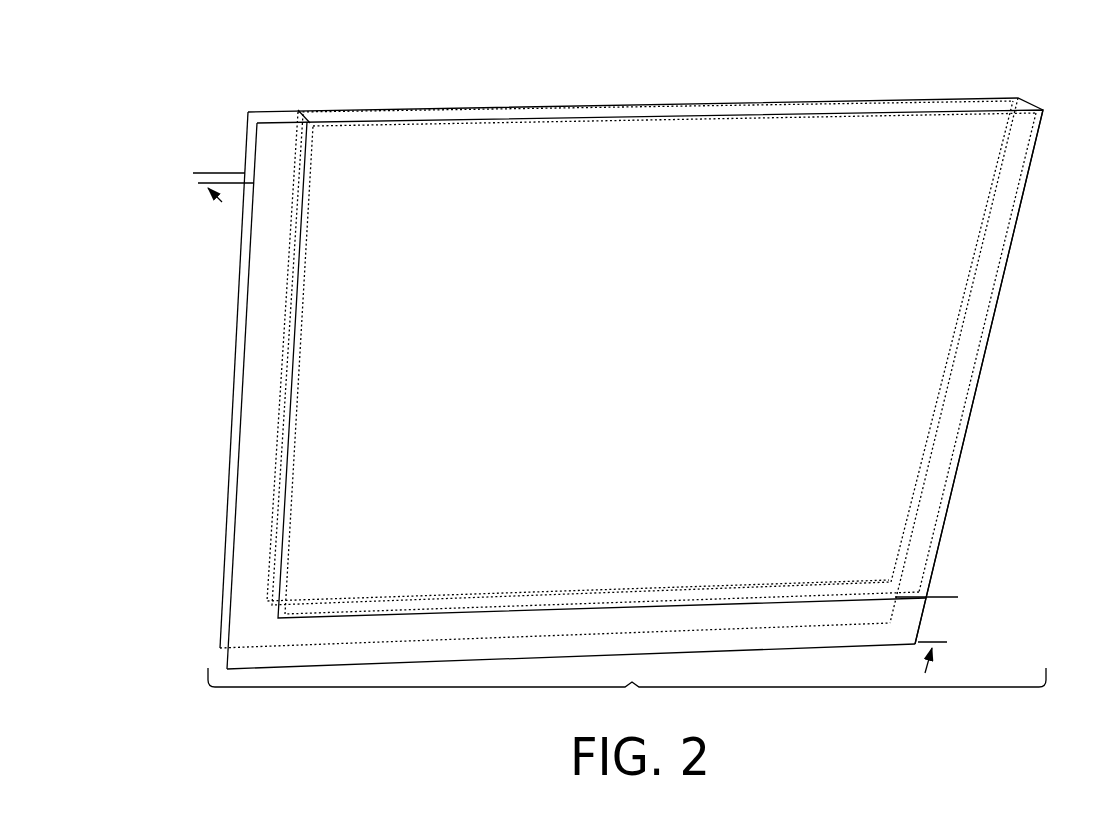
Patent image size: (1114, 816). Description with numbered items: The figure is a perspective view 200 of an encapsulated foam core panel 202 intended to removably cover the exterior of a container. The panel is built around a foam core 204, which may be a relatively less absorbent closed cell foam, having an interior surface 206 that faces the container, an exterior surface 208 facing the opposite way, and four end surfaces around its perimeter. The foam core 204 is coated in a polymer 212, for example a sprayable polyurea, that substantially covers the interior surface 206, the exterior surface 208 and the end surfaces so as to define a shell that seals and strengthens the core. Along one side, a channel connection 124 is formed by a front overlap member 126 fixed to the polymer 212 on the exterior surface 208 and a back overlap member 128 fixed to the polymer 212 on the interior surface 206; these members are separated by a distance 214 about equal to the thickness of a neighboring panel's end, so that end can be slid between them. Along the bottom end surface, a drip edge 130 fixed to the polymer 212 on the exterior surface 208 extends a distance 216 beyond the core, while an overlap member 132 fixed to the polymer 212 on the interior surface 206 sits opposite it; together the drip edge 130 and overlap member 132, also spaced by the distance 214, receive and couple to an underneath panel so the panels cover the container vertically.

The encapsulated foam core panel 202 is at (127, 46).
The channel connection 124 is at (242, 131).
The back overlap member 128 is at (240, 262).
The front overlap member 126 is at (248, 288).
The drip edge 130 is at (813, 648).
The overlap member 132 is at (813, 628).
The polymer 212 is at (962, 455).
The distance 214 is at (192, 172).
The distance 216 is at (947, 594).
The foam core 204 is at (1029, 104).
The interior surface 206 is at (314, 111).
The exterior surface 208 is at (326, 127).
The perspective view 200 is at (627, 695).